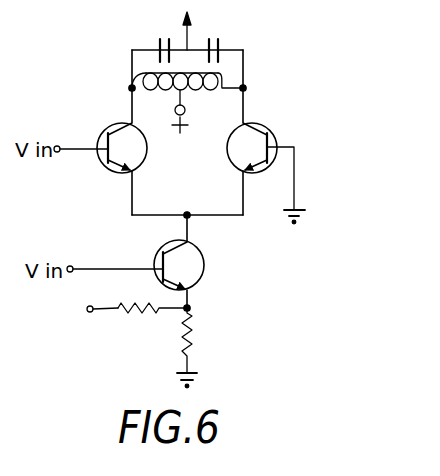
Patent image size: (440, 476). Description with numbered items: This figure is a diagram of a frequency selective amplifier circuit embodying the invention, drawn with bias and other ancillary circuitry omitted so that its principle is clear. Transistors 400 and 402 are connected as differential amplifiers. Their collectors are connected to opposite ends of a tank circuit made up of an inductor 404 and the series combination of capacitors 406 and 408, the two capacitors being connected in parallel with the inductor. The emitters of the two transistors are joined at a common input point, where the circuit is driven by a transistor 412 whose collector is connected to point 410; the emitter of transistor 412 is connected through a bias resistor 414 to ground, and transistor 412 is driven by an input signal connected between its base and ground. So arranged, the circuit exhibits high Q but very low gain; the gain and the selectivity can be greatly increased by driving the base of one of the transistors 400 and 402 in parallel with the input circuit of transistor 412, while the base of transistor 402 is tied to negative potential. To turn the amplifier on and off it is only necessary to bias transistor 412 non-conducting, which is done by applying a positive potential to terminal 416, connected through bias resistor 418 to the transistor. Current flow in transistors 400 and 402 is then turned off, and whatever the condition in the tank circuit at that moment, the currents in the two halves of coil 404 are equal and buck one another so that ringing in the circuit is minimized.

The transistor 400 is at (105, 165).
The transistor 402 is at (263, 123).
The inductor 404 is at (138, 78).
The capacitor 406 is at (157, 43).
The capacitor 408 is at (218, 38).
The point 410 is at (188, 213).
The transistor 412 is at (205, 276).
The bias resistor 414 is at (195, 342).
The terminal 416 is at (88, 313).
The bias resistor 418 is at (141, 311).